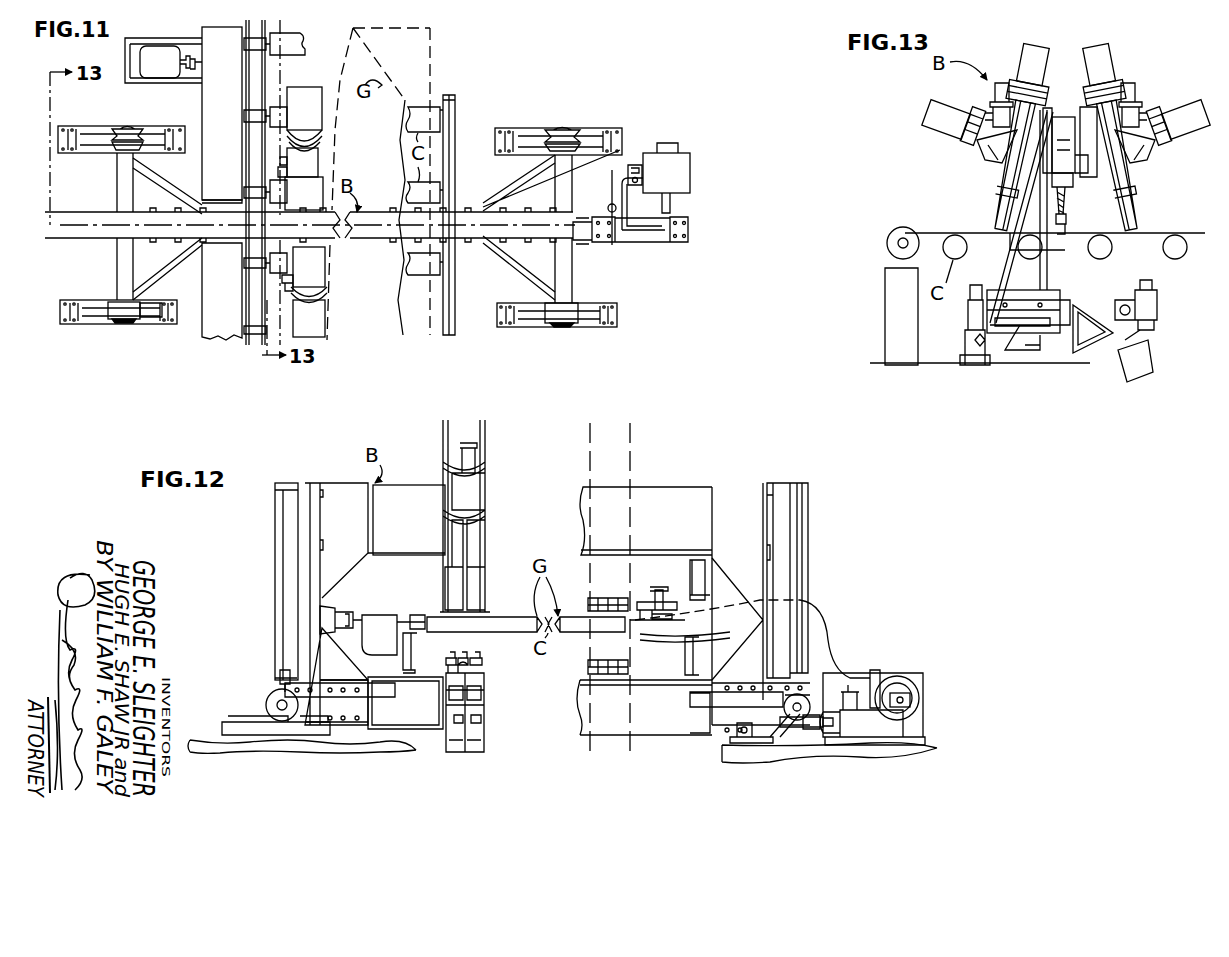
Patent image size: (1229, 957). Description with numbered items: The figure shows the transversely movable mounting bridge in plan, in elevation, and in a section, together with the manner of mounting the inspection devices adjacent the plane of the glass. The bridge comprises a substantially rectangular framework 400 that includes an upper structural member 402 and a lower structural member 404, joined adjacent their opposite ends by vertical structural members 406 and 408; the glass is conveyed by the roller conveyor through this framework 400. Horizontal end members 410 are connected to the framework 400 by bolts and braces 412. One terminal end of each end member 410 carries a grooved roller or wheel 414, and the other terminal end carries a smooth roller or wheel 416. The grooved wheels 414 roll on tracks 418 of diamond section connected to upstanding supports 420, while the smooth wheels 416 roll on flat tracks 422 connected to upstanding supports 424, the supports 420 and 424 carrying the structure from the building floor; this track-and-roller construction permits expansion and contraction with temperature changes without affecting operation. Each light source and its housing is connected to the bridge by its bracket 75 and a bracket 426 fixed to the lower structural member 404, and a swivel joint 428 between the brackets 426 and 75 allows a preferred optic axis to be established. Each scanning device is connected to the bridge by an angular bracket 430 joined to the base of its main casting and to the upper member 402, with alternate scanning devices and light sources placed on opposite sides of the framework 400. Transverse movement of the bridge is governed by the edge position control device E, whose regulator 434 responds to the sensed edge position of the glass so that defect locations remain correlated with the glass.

In FIG. 11, the framework 400 is at (118, 232).
In FIG. 12, the framework 400 is at (300, 487).
In FIG. 12, the upper structural member 402 is at (415, 485).
In FIG. 12, the lower structural member 404 is at (425, 680).
In FIG. 12, the vertical structural member 406 is at (312, 528).
In FIG. 12, the vertical structural member 408 is at (784, 544).
In FIG. 11, the horizontal end member 410 is at (117, 270).
In FIG. 12, the horizontal end member 410 is at (280, 678).
In FIG. 11, the brace 412 is at (187, 262).
In FIG. 11, the grooved roller or wheel 414 is at (117, 127).
In FIG. 11, the smooth roller or wheel 416 is at (115, 319).
In FIG. 12, the smooth roller or wheel 416 is at (267, 704).
In FIG. 11, the track of diamond section 418 is at (148, 130).
In FIG. 11, the upstanding support 420 is at (185, 132).
In FIG. 11, the flat track 422 is at (155, 319).
In FIG. 12, the flat track 422 is at (232, 724).
In FIG. 11, the upstanding support 424 is at (66, 300).
In FIG. 12, the upstanding support 424 is at (222, 748).
In FIG. 13, the bracket 426 is at (1100, 318).
In FIG. 12, the bracket 426 is at (448, 737).
In FIG. 13, the swivel joint 428 is at (1122, 340).
In FIG. 11, the angular bracket 430 is at (272, 264).
In FIG. 13, the angular bracket 430 is at (1090, 176).
In FIG. 12, the regulator 434 is at (629, 626).
In FIG. 13, the bracket 75 is at (1156, 313).
In FIG. 11, the edge position control device E is at (694, 188).